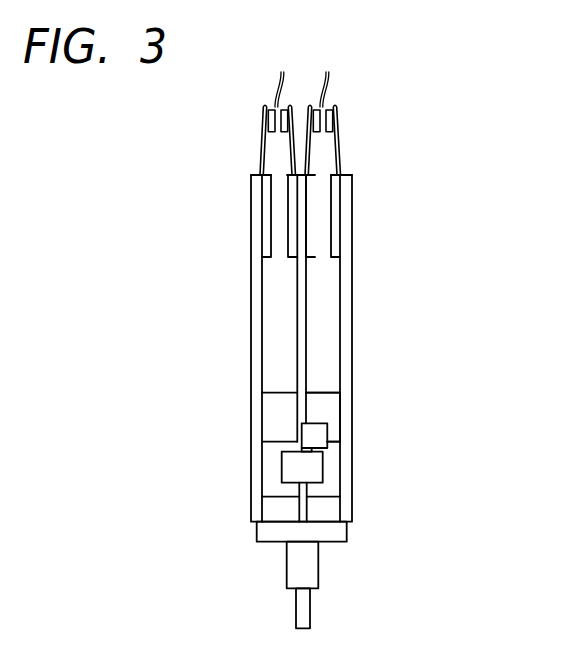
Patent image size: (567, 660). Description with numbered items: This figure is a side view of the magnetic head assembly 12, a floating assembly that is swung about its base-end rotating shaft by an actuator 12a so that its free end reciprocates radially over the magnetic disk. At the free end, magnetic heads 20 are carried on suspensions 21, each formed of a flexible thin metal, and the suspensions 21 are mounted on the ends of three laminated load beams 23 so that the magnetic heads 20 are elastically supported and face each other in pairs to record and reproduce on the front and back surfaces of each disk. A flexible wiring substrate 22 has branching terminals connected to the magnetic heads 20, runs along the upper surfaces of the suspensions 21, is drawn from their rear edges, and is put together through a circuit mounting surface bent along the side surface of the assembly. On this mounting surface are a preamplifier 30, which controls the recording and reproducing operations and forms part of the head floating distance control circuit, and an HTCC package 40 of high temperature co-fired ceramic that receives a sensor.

The magnetic head assembly 12 is at (173, 216).
The actuator 12a is at (287, 605).
The magnetic head 20 is at (305, 72).
The suspension 21 is at (292, 160).
The flexible wiring substrate 22 is at (323, 408).
The load beam 23 is at (258, 307).
The preamplifier 30 is at (290, 462).
The HTCC package 40 is at (302, 433).